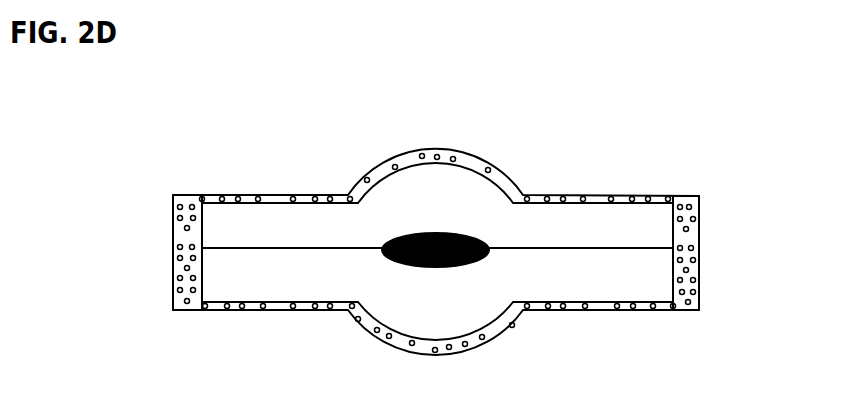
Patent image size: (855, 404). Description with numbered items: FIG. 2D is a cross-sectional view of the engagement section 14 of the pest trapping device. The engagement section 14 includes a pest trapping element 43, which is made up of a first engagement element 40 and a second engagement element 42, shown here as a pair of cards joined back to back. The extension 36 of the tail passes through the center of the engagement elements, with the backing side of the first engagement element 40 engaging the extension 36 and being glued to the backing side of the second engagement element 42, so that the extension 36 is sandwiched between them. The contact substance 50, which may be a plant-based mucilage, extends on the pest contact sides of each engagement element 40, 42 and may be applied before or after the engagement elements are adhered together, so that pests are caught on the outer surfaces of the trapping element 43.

The engagement section 14 is at (279, 133).
The extension 36 is at (413, 232).
The first engagement element 40 is at (222, 276).
The second engagement element 42 is at (222, 223).
The pest trapping element 43 is at (708, 235).
The contact substance 50 is at (577, 198).